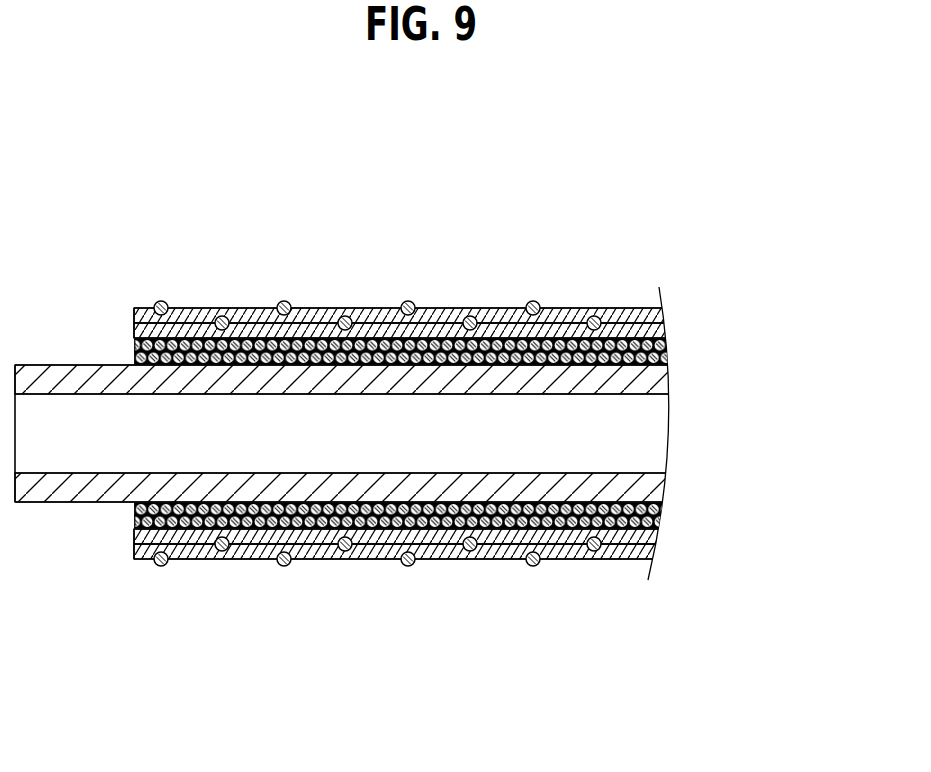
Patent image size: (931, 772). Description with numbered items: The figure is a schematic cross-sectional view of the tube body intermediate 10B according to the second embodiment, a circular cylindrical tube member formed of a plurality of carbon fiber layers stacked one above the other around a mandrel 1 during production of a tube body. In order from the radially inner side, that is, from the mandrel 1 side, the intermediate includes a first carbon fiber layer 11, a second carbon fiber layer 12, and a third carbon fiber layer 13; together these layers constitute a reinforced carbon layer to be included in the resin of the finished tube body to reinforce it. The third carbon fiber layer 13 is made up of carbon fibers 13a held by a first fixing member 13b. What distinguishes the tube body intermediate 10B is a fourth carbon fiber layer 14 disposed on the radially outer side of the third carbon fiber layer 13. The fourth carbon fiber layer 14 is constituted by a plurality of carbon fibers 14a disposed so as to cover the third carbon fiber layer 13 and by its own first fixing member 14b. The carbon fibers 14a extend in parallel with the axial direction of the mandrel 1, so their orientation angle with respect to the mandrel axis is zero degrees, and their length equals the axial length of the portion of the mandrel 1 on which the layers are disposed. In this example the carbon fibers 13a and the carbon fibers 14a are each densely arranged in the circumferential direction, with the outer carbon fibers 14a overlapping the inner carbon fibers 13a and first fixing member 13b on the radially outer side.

The tube body intermediate 10B is at (231, 178).
The mandrel 1 is at (653, 379).
The first carbon fiber layer 11 is at (668, 357).
The second carbon fiber layer 12 is at (668, 345).
The third carbon fiber layer 13 is at (496, 432).
The carbon fibers 13a is at (668, 330).
The first fixing member 13b is at (600, 310).
The fourth carbon fiber layer 14 is at (377, 436).
The carbon fibers 14a is at (460, 308).
The first fixing member 14b is at (458, 248).